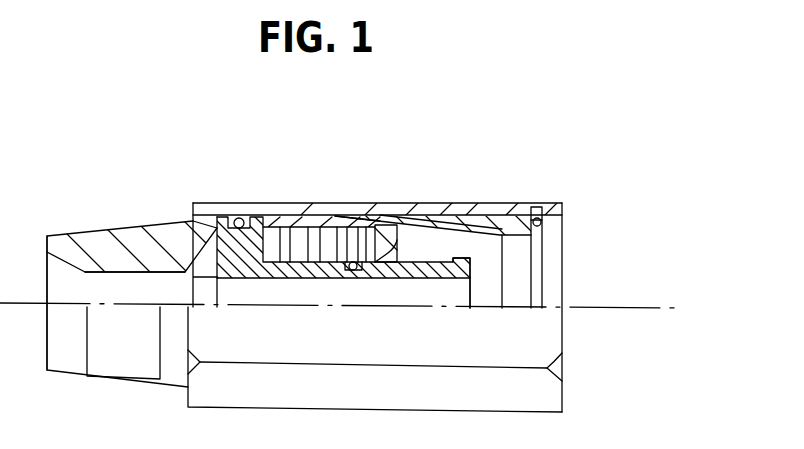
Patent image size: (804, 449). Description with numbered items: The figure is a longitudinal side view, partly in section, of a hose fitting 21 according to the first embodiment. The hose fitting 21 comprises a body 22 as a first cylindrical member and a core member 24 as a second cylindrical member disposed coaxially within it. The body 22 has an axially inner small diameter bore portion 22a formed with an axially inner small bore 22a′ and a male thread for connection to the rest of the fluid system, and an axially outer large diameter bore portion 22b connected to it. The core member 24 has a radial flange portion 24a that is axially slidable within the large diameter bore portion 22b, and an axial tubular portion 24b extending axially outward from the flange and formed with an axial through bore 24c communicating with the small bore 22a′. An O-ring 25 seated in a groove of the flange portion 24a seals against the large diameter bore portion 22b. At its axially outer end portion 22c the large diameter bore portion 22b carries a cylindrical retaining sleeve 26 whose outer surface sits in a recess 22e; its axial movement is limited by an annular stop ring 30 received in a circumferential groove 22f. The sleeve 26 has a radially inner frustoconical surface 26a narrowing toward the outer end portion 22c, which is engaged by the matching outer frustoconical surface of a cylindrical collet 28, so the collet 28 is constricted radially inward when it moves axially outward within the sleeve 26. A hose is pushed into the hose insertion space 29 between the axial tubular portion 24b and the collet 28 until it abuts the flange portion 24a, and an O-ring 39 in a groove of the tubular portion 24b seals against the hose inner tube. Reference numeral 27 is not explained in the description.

The hose fitting 21 is at (656, 152).
The body 22 is at (197, 204).
The small diameter bore portion 22a is at (102, 233).
The axially inner small bore 22a′ is at (103, 273).
The large diameter bore portion 22b is at (356, 218).
The axially outer end portion 22c is at (562, 217).
The recess 22e is at (364, 222).
The circumferential groove 22f is at (530, 208).
The core member 24 is at (183, 222).
The radial flange portion 24a is at (253, 218).
The axial tubular portion 24b is at (472, 263).
The axial through bore 24c is at (290, 279).
The O-ring 25 is at (237, 216).
The cylindrical retaining sleeve 26 is at (443, 212).
The radially inner frustoconical surface 26a is at (503, 238).
The guide surface 27 is at (413, 233).
The cylindrical collet 28 is at (323, 216).
The hose insertion space 29 is at (373, 245).
The annular stop ring 30 is at (541, 220).
The O-ring 39 is at (352, 273).